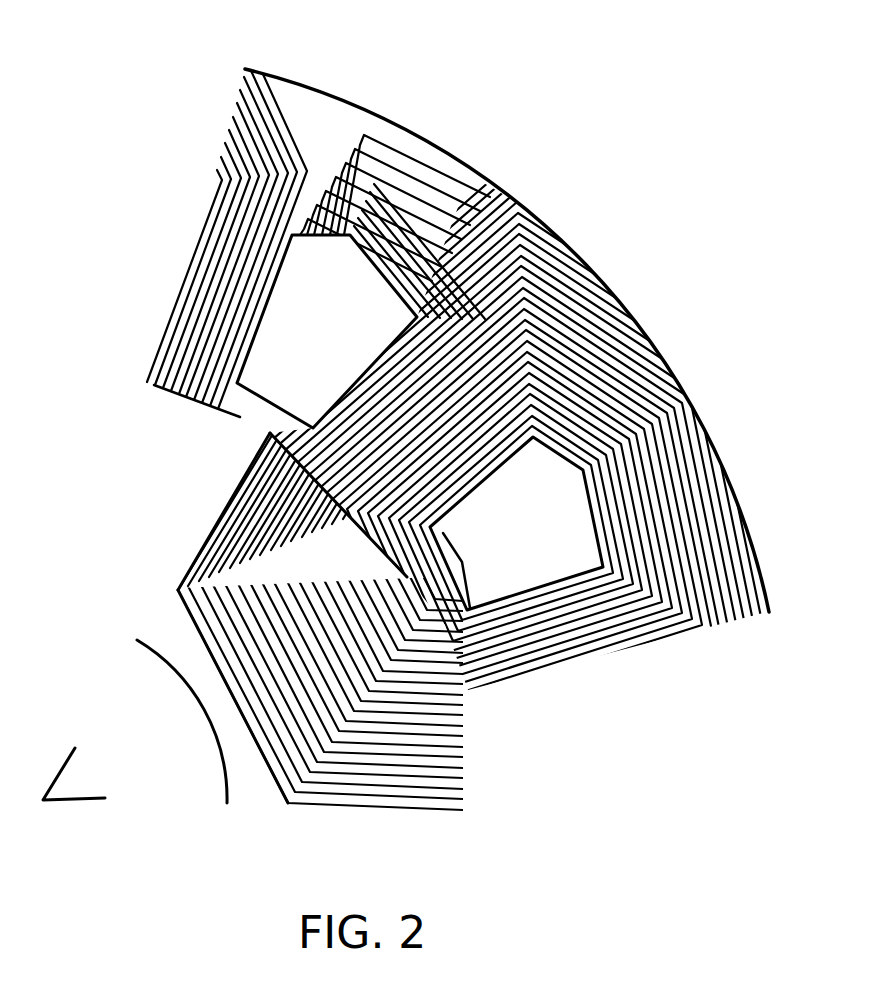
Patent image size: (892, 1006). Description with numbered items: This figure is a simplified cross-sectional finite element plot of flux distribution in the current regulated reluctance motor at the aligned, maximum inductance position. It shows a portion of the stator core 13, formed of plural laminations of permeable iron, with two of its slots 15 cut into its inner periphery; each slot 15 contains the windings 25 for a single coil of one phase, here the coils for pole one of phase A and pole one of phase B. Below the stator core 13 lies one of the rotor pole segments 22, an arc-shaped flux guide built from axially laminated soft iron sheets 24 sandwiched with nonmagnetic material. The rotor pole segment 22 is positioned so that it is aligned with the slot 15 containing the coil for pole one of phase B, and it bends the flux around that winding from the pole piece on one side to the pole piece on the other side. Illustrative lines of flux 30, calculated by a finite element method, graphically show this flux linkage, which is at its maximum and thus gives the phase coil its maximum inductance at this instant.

The stator core 13 is at (349, 97).
The slots 15 is at (258, 308).
The rotor pole segments 22 is at (225, 510).
The axially laminated soft iron sheets 24 is at (467, 795).
The windings 25 is at (370, 262).
The lines of flux 30 is at (548, 272).